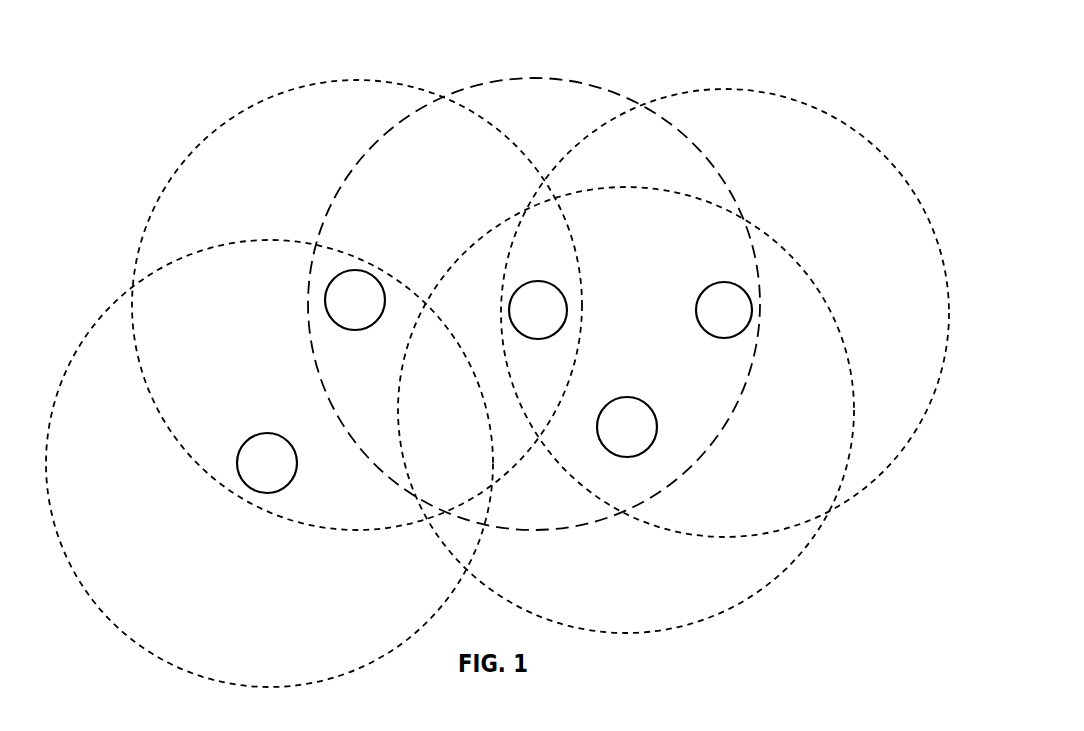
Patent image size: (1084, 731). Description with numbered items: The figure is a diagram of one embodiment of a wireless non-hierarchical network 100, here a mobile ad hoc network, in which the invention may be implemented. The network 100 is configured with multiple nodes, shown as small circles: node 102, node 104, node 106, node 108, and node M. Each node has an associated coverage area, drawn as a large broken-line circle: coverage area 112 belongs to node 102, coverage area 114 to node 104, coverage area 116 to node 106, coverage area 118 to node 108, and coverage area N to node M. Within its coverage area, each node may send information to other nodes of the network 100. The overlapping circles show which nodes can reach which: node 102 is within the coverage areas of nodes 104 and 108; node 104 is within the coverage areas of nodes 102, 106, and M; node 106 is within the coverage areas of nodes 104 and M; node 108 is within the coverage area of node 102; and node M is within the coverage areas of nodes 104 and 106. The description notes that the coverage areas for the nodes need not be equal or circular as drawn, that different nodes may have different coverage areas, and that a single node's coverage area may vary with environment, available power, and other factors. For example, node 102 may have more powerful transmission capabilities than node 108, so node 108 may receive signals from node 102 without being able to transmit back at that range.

The wireless non-hierarchical network 100 is at (709, 62).
The node 102 is at (372, 272).
The node 104 is at (538, 281).
The node 106 is at (699, 293).
The node 108 is at (243, 490).
The coverage area 112 is at (203, 141).
The coverage area 114 is at (476, 88).
The coverage area 116 is at (875, 150).
The coverage area 118 is at (101, 314).
The node M is at (649, 450).
The coverage area N is at (807, 543).